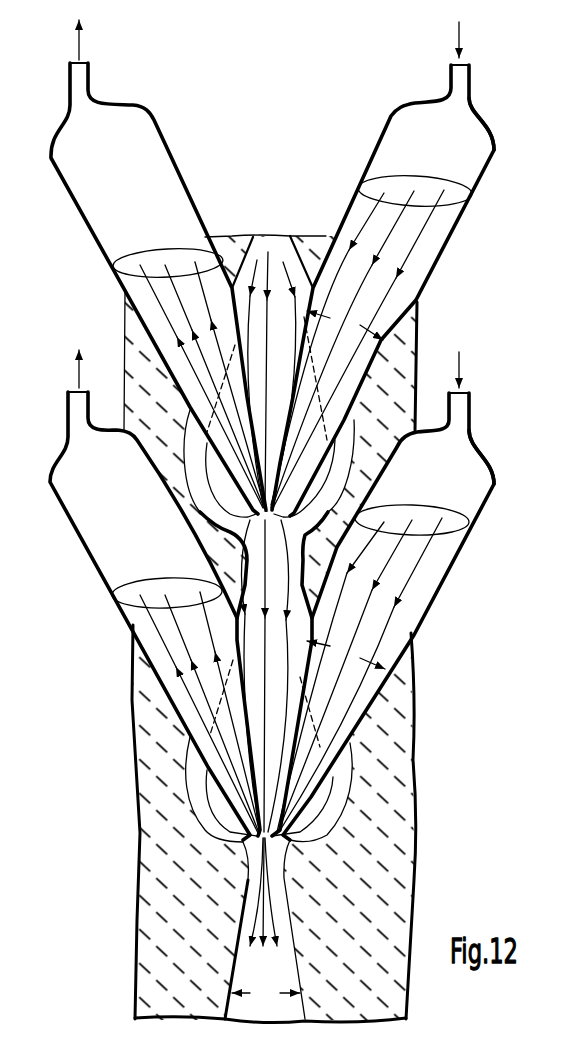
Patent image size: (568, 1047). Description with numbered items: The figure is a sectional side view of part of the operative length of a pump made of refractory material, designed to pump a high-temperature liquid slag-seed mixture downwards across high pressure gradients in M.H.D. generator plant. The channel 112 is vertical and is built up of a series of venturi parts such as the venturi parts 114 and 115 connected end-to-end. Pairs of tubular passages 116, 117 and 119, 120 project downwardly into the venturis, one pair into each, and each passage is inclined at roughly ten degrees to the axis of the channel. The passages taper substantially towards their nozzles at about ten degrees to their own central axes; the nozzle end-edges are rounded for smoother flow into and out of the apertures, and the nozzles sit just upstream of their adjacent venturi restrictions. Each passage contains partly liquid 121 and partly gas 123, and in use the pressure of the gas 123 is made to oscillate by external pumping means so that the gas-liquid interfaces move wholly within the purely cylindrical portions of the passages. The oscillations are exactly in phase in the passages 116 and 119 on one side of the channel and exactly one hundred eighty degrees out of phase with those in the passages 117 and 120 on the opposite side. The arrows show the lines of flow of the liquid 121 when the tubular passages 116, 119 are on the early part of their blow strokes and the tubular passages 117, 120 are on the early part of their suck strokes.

The channel 112 is at (293, 928).
The venturi part 114 is at (344, 460).
The venturi part 115 is at (339, 783).
The tubular passage 116 is at (459, 215).
The tubular passage 117 is at (83, 215).
The tubular passage 119 is at (466, 535).
The tubular passage 120 is at (73, 534).
The liquid 121 is at (275, 257).
The gas 123 is at (477, 163).